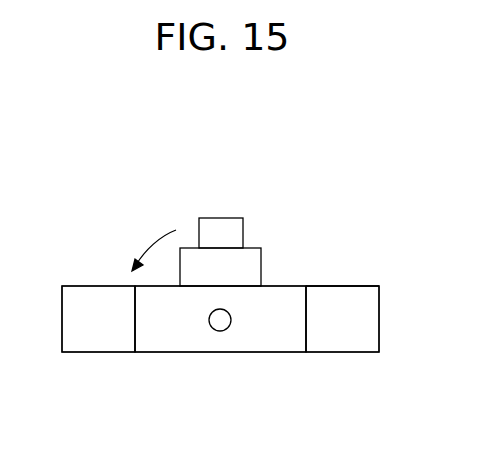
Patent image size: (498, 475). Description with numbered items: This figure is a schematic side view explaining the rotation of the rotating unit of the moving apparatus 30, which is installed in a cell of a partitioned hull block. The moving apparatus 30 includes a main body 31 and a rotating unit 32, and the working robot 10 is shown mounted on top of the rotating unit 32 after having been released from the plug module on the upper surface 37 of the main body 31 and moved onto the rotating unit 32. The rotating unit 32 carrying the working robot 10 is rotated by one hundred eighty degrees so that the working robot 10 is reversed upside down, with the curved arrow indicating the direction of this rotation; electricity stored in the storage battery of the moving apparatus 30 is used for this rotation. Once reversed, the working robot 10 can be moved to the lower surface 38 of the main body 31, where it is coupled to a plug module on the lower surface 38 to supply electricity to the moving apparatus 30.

The working robot 10 is at (235, 215).
The moving apparatus 30 is at (342, 416).
The main body 31 is at (333, 333).
The rotating unit 32 is at (253, 333).
The upper surface 37 is at (345, 286).
The lower surface 38 is at (100, 352).